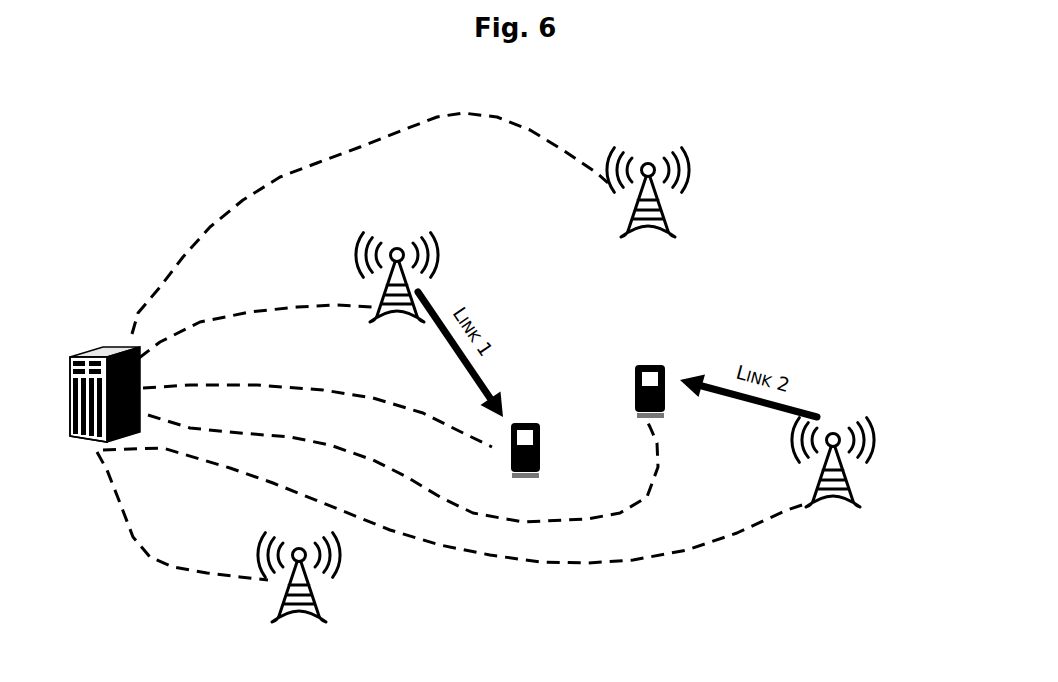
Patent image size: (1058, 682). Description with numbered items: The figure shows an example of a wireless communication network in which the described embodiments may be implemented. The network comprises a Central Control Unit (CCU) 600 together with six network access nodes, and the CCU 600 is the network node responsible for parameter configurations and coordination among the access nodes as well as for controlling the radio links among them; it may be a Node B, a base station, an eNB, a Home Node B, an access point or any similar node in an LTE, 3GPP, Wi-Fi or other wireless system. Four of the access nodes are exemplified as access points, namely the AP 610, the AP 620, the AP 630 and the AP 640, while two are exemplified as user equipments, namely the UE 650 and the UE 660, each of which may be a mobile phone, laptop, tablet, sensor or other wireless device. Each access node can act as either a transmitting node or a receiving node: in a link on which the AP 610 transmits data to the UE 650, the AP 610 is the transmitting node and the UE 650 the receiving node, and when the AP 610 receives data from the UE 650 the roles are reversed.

The Central Control Unit (CCU) 600 is at (113, 341).
The access point (AP) 610 is at (419, 241).
The access point (AP) 620 is at (938, 501).
The access point (AP) 630 is at (756, 182).
The access point (AP) 640 is at (388, 622).
The user equipment (UE) 650 is at (579, 501).
The user equipment (UE) 660 is at (623, 374).